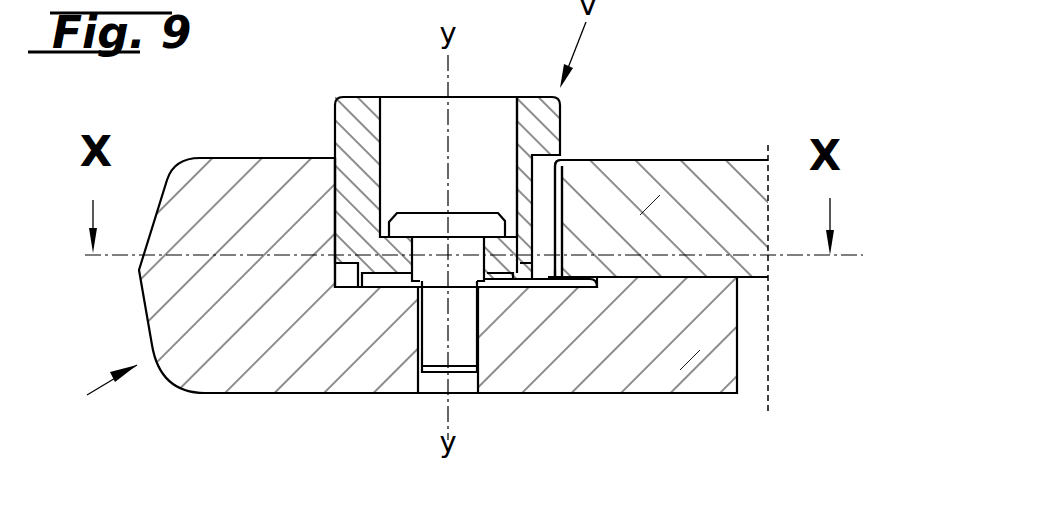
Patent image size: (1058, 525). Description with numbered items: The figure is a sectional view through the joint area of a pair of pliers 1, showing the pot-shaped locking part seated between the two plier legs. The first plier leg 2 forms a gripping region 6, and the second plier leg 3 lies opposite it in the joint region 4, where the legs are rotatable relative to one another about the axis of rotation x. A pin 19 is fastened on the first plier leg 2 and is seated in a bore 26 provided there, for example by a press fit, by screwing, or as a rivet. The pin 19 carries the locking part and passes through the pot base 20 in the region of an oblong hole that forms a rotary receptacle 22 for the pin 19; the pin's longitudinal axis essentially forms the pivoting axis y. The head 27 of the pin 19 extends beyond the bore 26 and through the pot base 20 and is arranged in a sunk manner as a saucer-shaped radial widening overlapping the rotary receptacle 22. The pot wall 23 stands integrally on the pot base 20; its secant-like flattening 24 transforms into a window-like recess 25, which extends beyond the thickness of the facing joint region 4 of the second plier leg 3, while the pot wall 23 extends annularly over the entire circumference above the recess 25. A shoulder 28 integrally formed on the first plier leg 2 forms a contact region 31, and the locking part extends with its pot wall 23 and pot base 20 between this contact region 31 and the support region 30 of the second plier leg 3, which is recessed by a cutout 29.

The pair of pliers 1 is at (104, 392).
The first plier leg 2 is at (218, 392).
The second plier leg 3 is at (728, 176).
The joint region 4 is at (690, 355).
The gripping region 6 is at (293, 353).
The pin 19 is at (432, 345).
The pot base 20 is at (387, 266).
The rotary receptacle 22 is at (513, 285).
The pot wall 23 is at (370, 116).
The flattening 24 is at (553, 280).
The recess 25 is at (520, 192).
The bore 26 is at (480, 357).
The head 27 is at (467, 228).
The shoulder 28 is at (308, 228).
The cutout 29 is at (563, 210).
The support region 30 is at (563, 190).
The contact region 31 is at (337, 212).